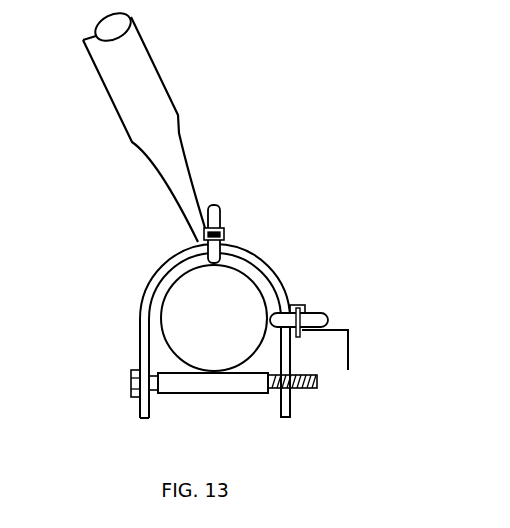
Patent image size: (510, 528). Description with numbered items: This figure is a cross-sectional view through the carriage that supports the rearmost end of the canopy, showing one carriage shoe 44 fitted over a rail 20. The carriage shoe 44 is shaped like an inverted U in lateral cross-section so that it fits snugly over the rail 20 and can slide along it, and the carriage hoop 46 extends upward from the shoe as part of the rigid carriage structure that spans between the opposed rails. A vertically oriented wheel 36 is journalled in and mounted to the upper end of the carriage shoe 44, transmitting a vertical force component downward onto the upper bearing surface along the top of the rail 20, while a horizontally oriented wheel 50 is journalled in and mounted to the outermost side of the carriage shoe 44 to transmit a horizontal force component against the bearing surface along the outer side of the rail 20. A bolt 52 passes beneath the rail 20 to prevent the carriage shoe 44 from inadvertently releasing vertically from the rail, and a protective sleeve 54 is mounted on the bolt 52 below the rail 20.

The rail 20 is at (257, 283).
The vertically oriented wheel 36 is at (220, 213).
The carriage shoe 44 is at (157, 278).
The carriage hoop 46 is at (137, 50).
The horizontally oriented wheel 50 is at (322, 320).
The bolt 52 is at (128, 378).
The protective sleeve 54 is at (237, 410).